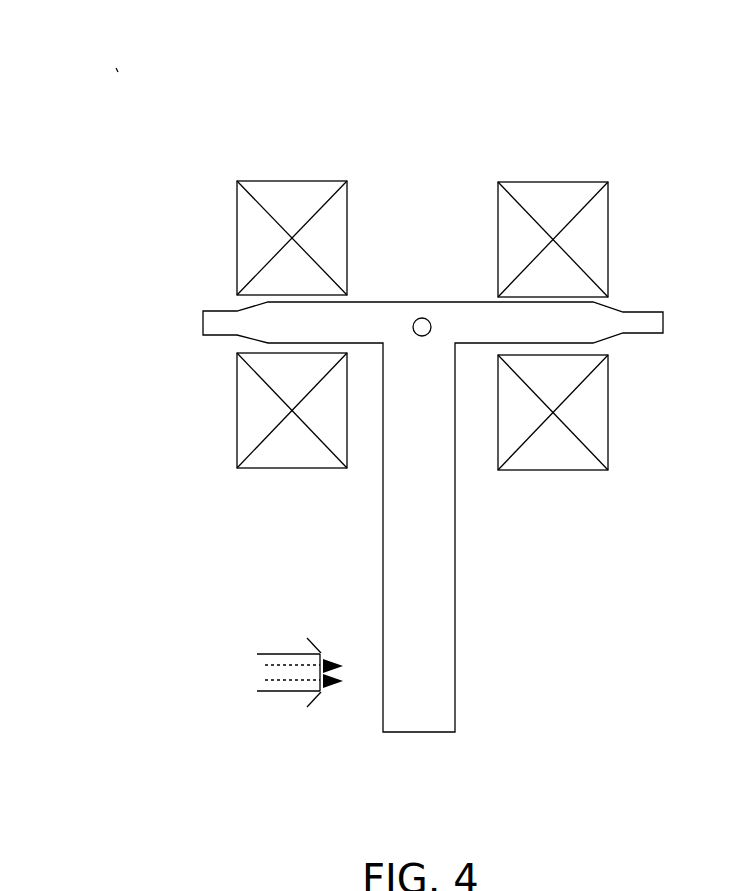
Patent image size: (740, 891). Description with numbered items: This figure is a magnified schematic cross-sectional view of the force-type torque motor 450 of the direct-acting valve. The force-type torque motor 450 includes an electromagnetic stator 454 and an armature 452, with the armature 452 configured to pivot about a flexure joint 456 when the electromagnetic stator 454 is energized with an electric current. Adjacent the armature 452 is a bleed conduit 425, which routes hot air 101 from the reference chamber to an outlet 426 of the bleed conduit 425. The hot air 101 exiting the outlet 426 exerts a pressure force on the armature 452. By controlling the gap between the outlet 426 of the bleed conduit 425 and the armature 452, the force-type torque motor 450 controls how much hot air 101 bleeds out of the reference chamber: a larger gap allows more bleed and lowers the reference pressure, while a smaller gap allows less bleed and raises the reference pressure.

The force-type torque motor 450 is at (116, 68).
The armature 452 is at (422, 560).
The electromagnetic stator 454 is at (553, 222).
The flexure joint 456 is at (422, 319).
The bleed conduit 425 is at (280, 656).
The outlet 426 is at (322, 657).
The hot air 101 is at (300, 666).